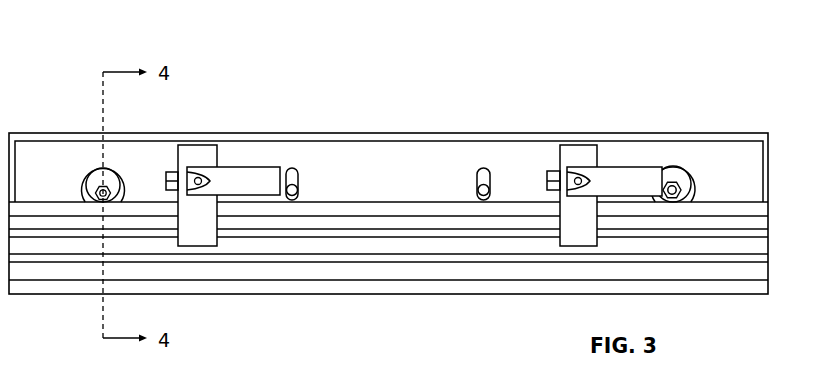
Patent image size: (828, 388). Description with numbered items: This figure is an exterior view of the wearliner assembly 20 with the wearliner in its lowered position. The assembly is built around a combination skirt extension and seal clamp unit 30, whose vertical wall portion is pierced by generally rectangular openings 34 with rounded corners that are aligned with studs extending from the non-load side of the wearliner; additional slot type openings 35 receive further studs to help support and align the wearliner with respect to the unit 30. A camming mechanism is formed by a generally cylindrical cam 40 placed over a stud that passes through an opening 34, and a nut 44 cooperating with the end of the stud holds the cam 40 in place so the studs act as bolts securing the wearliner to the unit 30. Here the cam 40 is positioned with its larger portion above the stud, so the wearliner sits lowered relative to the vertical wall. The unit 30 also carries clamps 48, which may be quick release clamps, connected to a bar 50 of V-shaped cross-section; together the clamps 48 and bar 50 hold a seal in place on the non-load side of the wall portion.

The wearliner assembly 20 is at (242, 57).
The combination skirt extension and seal clamp unit 30 is at (350, 148).
The openings 34 is at (82, 184).
The slot type openings 35 is at (292, 170).
The cam 40 is at (108, 172).
The nut 44 is at (121, 183).
The clamps 48 is at (623, 173).
The bar 50 is at (363, 235).